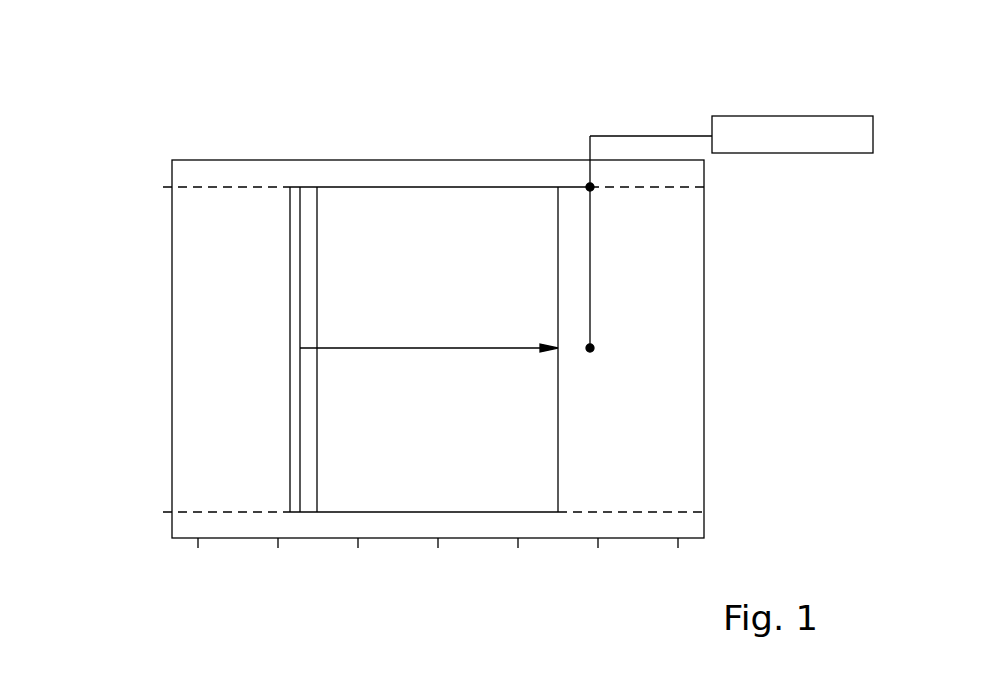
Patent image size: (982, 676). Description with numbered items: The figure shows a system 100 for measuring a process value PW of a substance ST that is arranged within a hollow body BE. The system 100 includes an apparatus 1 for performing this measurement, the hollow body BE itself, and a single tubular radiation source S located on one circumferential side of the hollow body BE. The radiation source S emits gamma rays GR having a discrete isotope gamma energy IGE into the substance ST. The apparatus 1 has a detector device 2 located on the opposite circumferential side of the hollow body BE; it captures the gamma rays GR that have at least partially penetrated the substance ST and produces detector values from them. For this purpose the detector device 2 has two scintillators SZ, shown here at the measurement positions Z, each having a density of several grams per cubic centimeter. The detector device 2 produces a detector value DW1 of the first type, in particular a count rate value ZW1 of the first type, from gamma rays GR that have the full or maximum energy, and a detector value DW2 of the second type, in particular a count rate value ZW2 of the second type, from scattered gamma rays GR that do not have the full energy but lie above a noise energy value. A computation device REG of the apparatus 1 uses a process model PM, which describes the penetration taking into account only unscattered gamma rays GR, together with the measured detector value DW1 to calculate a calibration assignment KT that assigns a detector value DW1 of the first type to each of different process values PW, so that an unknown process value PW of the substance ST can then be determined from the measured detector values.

The system 100 is at (130, 122).
The radiation source S is at (290, 350).
The discrete isotope gamma energy IGE is at (335, 345).
The substance ST is at (423, 287).
The gamma rays GR is at (497, 318).
The hollow body BE is at (317, 402).
The detector value of the first type DW1 is at (572, 123).
The count rate value of the first type ZW1 is at (612, 136).
The detector value of the second type DW2 is at (662, 80).
The count rate value of the second type ZW2 is at (690, 135).
The apparatus 1 is at (729, 205).
The detector device 2 is at (710, 265).
The computation device REG is at (792, 99).
The process model PM is at (792, 134).
The calibration assignment KT is at (792, 134).
The process value PW is at (826, 116).
The target point Z is at (710, 265).
The scintillator SZ is at (590, 187).